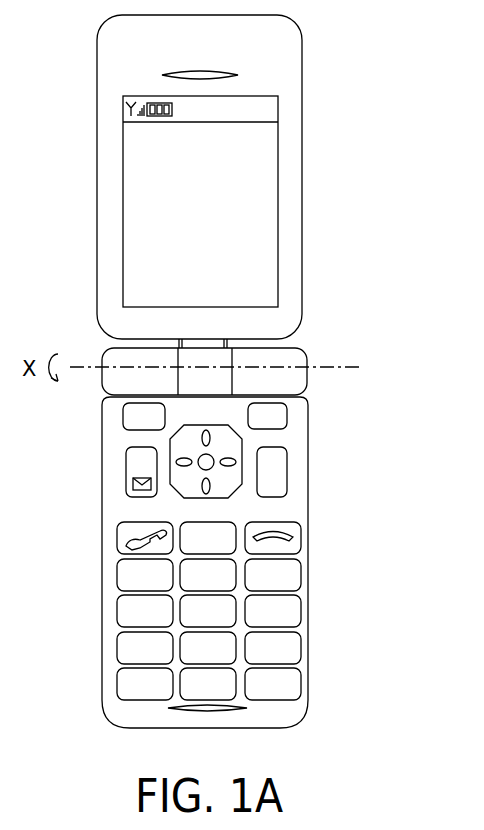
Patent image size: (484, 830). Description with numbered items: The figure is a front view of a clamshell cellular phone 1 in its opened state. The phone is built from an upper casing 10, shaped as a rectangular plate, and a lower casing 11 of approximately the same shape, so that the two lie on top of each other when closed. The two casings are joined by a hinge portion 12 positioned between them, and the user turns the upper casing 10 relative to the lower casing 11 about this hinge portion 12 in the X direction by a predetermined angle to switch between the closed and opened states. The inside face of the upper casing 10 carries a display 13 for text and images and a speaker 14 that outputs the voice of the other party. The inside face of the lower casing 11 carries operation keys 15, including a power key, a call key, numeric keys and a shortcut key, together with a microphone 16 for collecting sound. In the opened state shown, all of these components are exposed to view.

The cellular phone 1 is at (331, 602).
The upper casing 10 is at (302, 218).
The lower casing 11 is at (308, 420).
The hinge portion 12 is at (306, 350).
The display 13 is at (278, 150).
The speaker 14 is at (238, 75).
The operation keys 15 is at (93, 417).
The microphone 16 is at (243, 709).